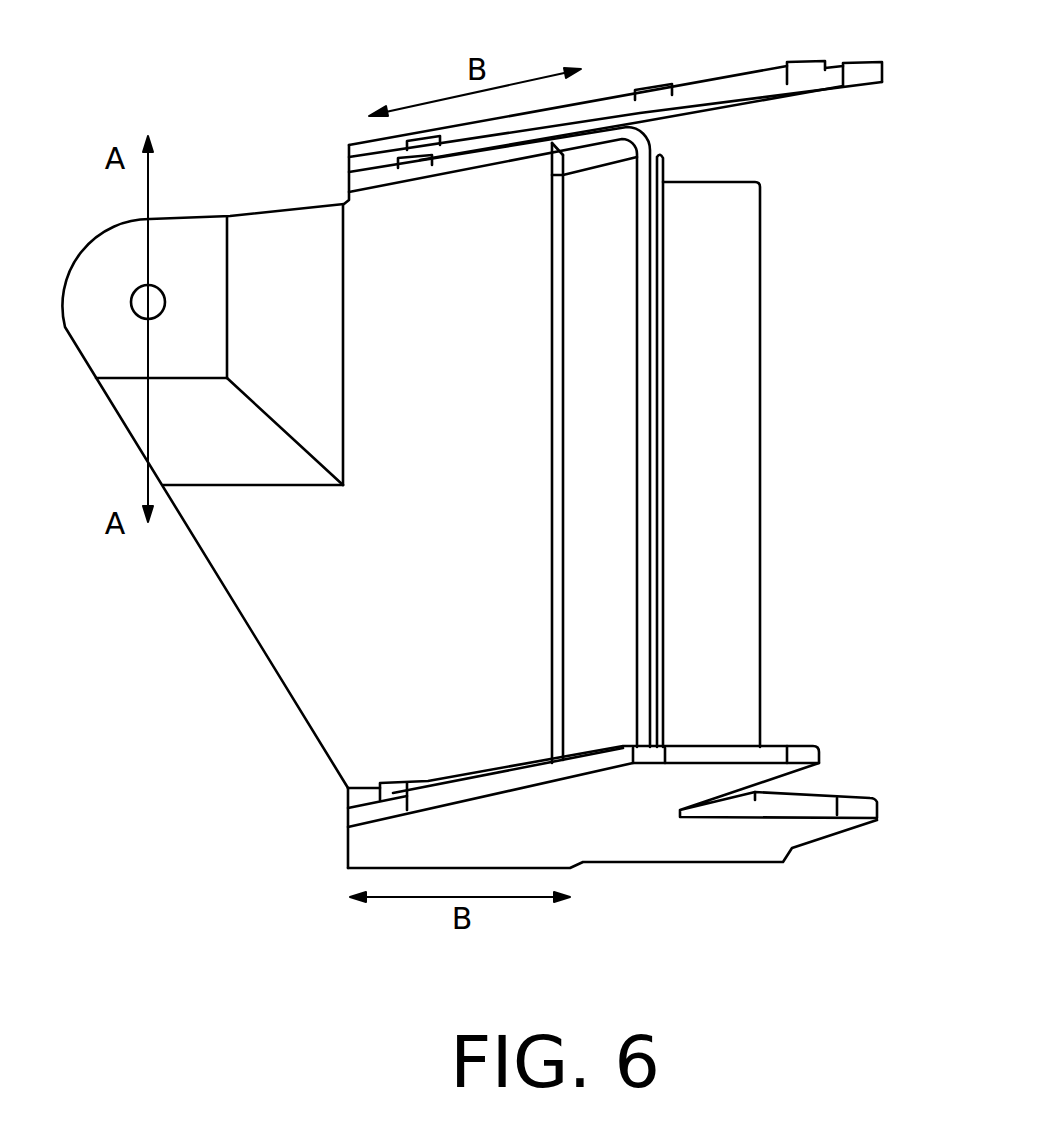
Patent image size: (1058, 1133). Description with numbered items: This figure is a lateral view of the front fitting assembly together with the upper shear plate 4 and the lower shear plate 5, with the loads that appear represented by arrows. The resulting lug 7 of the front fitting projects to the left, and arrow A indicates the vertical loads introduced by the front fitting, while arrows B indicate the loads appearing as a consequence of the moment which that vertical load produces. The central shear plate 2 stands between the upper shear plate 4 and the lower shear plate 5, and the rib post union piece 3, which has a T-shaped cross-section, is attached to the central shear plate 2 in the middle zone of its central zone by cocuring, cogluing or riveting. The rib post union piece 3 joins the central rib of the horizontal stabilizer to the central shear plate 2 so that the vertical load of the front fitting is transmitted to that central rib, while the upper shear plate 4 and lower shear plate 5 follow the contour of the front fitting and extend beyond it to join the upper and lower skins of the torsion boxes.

The central shear plate 2 is at (665, 168).
The rib post union piece 3 is at (728, 370).
The upper shear plate 4 is at (610, 100).
The lower shear plate 5 is at (660, 830).
The resulting lug of the front fitting 7 is at (297, 623).